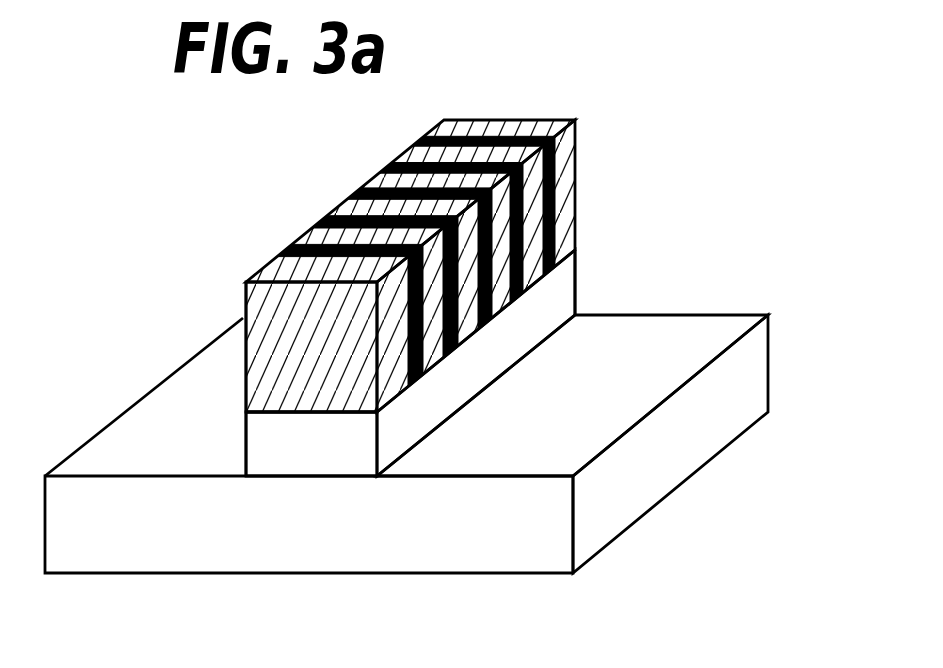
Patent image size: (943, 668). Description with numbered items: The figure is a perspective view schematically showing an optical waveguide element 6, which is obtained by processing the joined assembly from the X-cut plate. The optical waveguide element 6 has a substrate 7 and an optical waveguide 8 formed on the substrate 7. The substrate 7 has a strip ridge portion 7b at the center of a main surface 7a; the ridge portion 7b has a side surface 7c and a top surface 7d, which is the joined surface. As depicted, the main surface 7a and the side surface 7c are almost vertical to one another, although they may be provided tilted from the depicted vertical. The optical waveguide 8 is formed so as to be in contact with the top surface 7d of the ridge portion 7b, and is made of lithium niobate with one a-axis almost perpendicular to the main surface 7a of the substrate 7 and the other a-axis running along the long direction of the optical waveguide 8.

The optical waveguide element 6 is at (732, 242).
The substrate 7 is at (742, 378).
The main surface 7a is at (637, 335).
The ridge portion 7b is at (345, 452).
The side surface 7c is at (480, 375).
The top surface 7d is at (302, 407).
The optical waveguide 8 is at (532, 107).